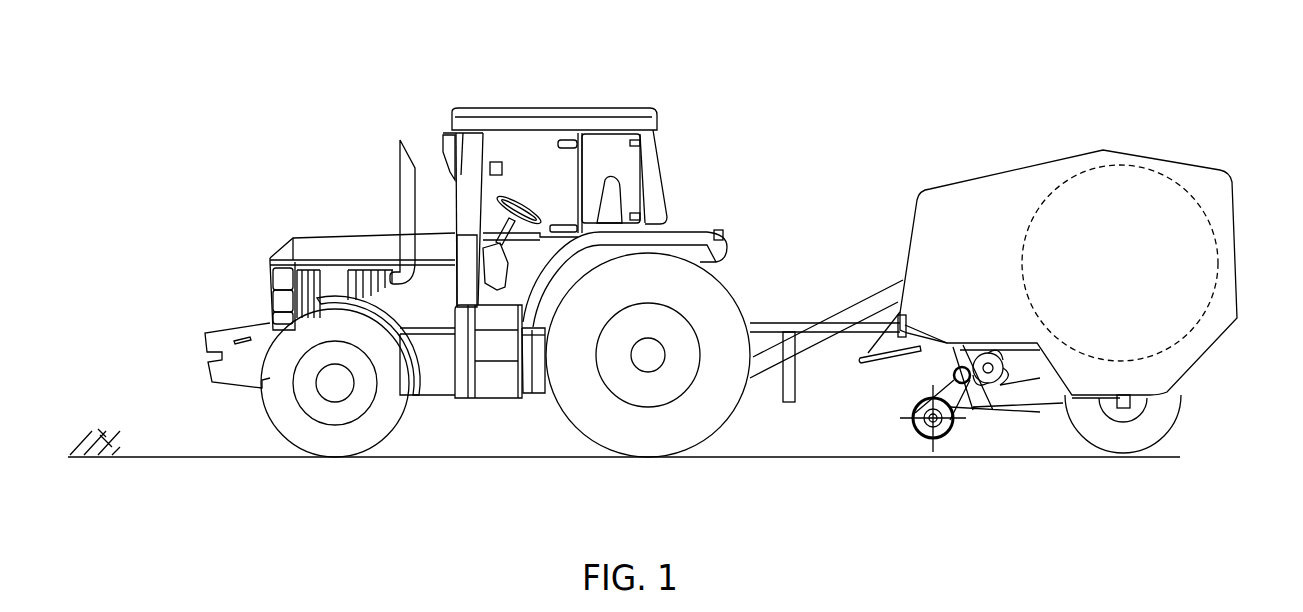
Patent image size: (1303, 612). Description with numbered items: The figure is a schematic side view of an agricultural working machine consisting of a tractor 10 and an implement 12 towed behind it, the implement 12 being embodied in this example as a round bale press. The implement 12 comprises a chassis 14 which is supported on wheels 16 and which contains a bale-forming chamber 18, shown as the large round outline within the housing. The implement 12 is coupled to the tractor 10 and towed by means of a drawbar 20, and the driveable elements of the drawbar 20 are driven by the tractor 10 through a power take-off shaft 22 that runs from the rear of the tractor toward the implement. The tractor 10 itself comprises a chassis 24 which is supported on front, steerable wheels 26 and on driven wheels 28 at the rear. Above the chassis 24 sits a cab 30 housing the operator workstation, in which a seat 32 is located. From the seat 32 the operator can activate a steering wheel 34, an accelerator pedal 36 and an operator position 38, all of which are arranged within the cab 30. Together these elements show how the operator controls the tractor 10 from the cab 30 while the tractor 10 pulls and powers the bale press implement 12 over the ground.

The tractor 10 is at (483, 98).
The implement 12 is at (1003, 130).
The chassis 14 is at (1197, 342).
The wheels 16 is at (1133, 440).
The bale-forming chamber 18 is at (1148, 197).
The drawbar 20 is at (858, 316).
The power take-off shaft 22 is at (767, 323).
The chassis 24 is at (440, 352).
The front, steerable wheels 26 is at (332, 437).
The driven wheels 28 is at (650, 432).
The cab 30 is at (648, 106).
The seat 32 is at (613, 190).
The steering wheel 34 is at (517, 202).
The accelerator pedal 36 is at (488, 308).
The operator position 38 is at (491, 169).